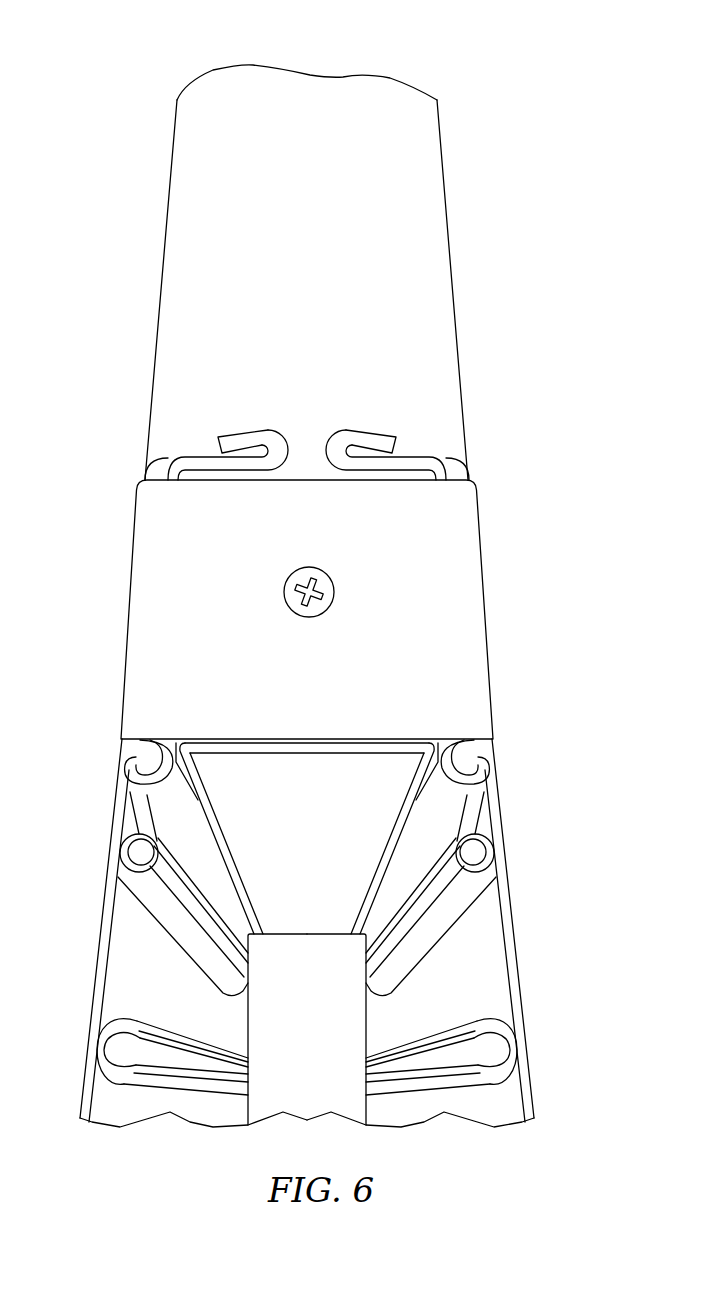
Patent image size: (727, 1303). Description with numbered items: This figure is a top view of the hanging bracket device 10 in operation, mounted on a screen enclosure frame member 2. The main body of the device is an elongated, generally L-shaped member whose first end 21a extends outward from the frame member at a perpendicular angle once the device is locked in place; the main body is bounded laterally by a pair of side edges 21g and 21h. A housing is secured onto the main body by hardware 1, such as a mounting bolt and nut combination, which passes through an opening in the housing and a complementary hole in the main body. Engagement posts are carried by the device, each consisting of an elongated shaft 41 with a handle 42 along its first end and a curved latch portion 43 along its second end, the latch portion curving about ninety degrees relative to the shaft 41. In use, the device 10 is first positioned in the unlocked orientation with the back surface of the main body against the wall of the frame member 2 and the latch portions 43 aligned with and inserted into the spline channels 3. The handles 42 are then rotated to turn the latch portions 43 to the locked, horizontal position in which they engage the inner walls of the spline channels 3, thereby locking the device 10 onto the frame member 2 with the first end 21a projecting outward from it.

The device 10 is at (118, 77).
The first end 21a is at (343, 75).
The side edge 21h is at (128, 592).
The side edge 21g is at (492, 610).
The hardware 1 is at (335, 589).
The elongated shaft 41 is at (168, 459).
The handle 42 is at (264, 428).
The curved latch portion 43 is at (132, 753).
The spline channels 3 is at (127, 757).
The screen enclosure frame member 2 is at (514, 940).